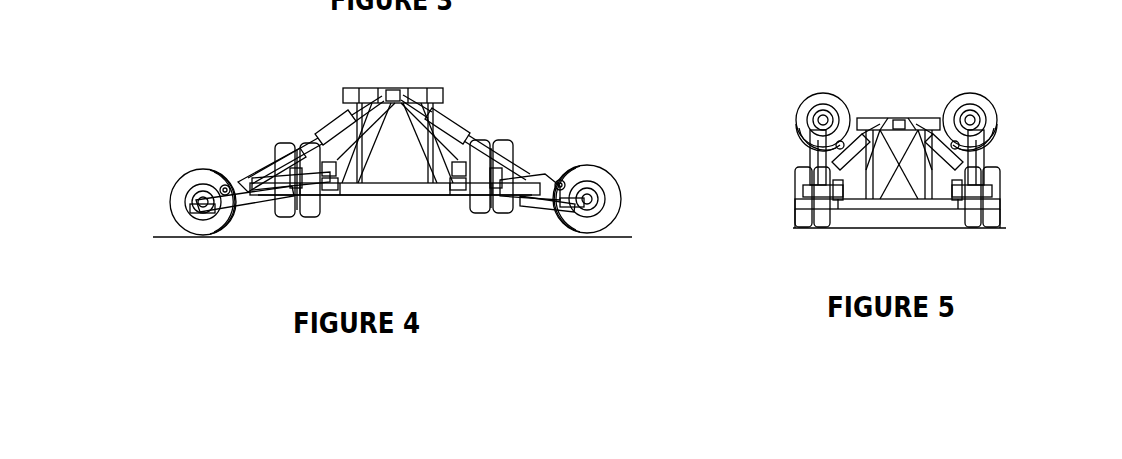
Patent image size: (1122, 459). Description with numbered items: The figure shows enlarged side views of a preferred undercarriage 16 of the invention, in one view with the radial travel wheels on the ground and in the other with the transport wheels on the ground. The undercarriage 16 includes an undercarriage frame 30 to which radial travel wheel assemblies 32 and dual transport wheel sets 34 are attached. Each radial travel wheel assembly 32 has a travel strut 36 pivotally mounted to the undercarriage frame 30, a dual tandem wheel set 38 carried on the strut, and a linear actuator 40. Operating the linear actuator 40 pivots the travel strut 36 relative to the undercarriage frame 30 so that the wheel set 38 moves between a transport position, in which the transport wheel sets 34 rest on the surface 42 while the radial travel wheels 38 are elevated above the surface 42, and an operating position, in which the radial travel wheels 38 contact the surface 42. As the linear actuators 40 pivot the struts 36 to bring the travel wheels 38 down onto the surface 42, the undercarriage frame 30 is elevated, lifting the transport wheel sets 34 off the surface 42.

In FIG. 4, the undercarriage 16 is at (503, 95).
In FIG. 5, the undercarriage 16 is at (920, 80).
In FIG. 4, the undercarriage frame 30 is at (413, 195).
In FIG. 5, the undercarriage frame 30 is at (896, 210).
In FIG. 4, the radial travel wheel assemblies 32 is at (248, 176).
In FIG. 4, the dual transport wheel sets 34 is at (277, 140).
In FIG. 5, the dual transport wheel sets 34 is at (795, 188).
In FIG. 4, the travel strut 36 is at (262, 205).
In FIG. 5, the travel strut 36 is at (815, 160).
In FIG. 4, the dual tandem wheel set 38 is at (171, 190).
In FIG. 5, the dual tandem wheel set 38 is at (822, 95).
In FIG. 4, the linear actuator 40 is at (343, 126).
In FIG. 5, the linear actuator 40 is at (875, 133).
In FIG. 4, the surface 42 is at (414, 238).